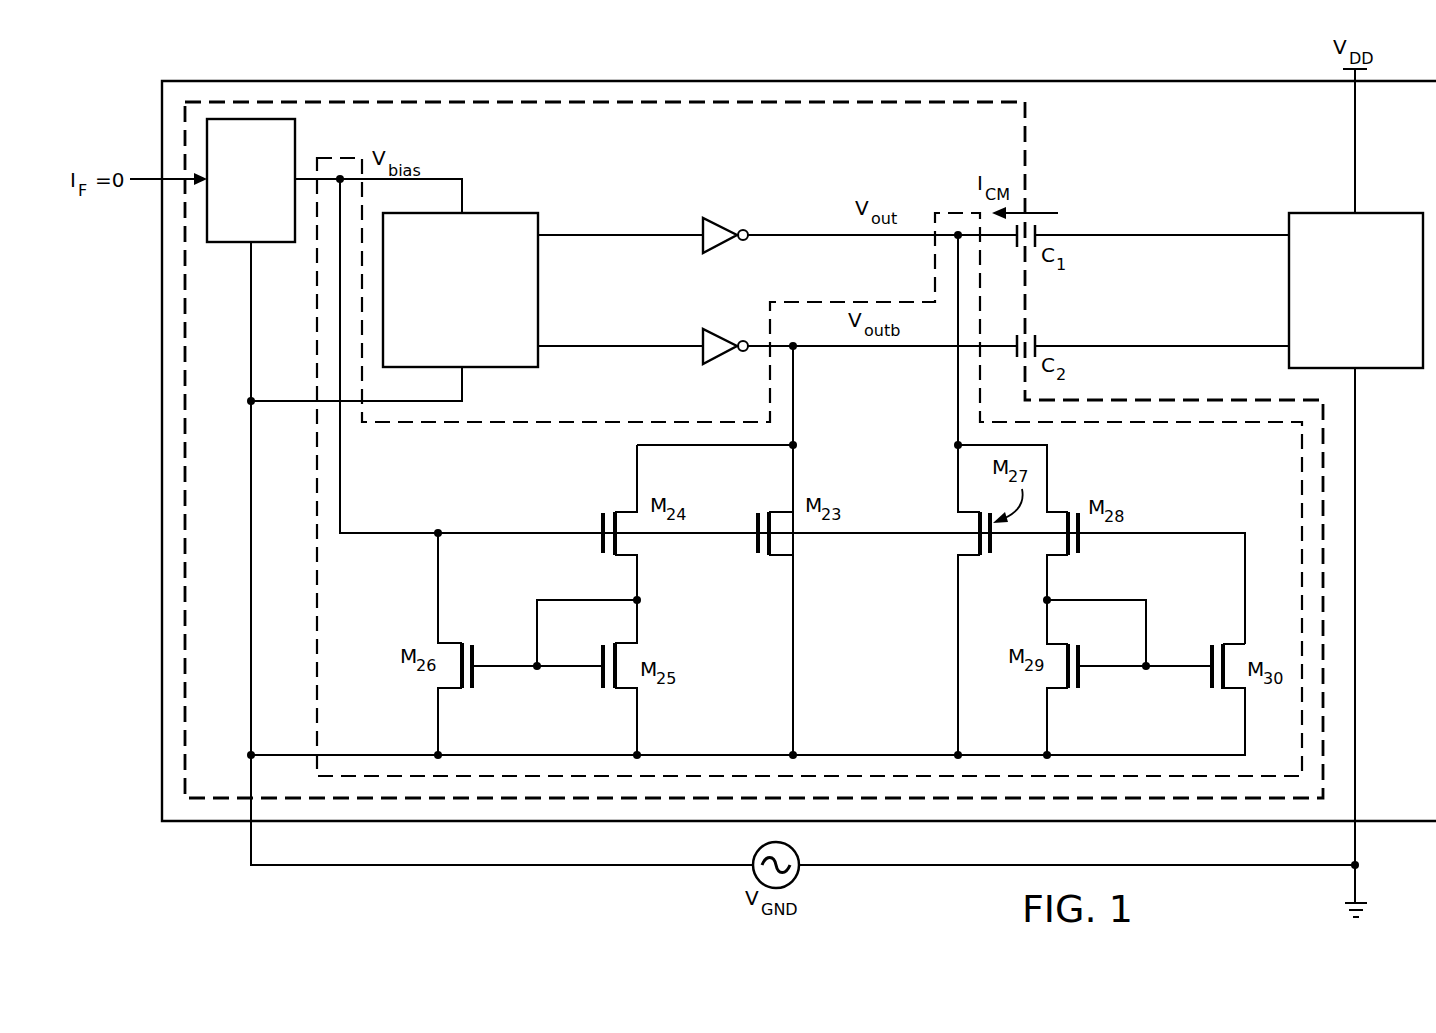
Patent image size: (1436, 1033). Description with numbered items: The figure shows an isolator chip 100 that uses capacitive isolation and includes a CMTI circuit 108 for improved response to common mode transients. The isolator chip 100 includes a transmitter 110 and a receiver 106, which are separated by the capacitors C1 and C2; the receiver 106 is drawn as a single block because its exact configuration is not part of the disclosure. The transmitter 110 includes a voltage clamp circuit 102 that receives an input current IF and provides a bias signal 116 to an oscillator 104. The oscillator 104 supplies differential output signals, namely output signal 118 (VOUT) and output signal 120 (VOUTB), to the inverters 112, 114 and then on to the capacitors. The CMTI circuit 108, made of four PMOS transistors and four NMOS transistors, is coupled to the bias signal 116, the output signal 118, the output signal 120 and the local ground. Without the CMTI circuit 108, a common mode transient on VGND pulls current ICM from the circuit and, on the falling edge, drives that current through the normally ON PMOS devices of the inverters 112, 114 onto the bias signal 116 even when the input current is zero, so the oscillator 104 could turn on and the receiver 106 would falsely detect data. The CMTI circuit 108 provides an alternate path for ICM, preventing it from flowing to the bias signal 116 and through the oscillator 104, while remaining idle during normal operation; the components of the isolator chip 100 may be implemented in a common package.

The isolator chip 100 is at (610, 78).
The voltage clamp circuit 102 is at (269, 223).
The oscillator 104 is at (482, 336).
The receiver 106 is at (1376, 323).
The CMTI circuit 108 is at (629, 416).
The transmitter 110 is at (1034, 181).
The inverter 112 is at (745, 207).
The inverter 114 is at (745, 318).
The bias signal 116 is at (462, 196).
The output signal 118 is at (880, 237).
The output signal 120 is at (880, 348).